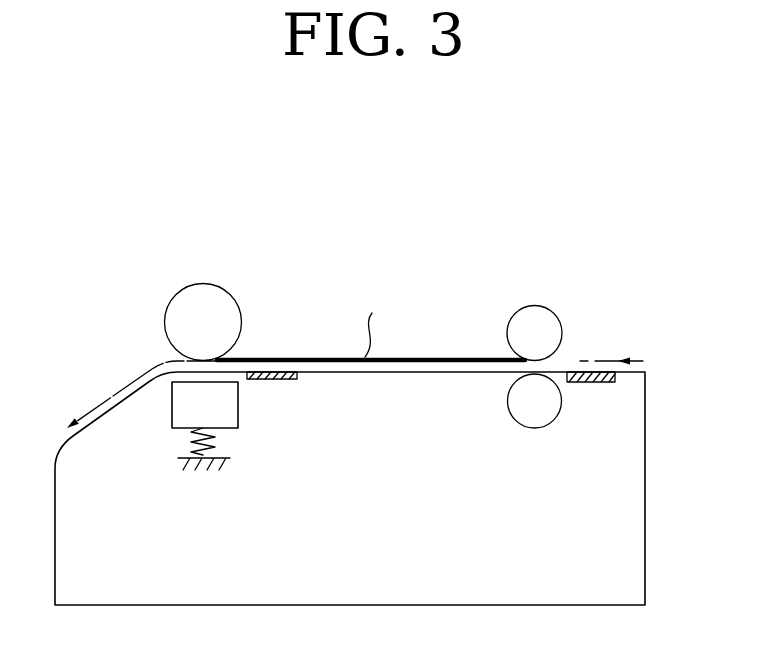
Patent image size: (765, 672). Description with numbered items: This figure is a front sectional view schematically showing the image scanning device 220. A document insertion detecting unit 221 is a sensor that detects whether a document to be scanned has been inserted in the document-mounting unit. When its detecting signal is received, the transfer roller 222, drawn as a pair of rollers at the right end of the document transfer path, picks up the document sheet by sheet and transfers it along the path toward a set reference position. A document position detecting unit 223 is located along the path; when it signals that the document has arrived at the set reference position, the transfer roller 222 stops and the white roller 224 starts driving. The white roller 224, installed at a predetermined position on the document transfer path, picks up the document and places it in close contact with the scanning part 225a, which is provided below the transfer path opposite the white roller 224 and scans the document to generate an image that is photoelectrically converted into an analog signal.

The image scanning device 220 is at (379, 203).
The document insertion detecting unit 221 is at (605, 383).
The transfer roller 222 is at (563, 378).
The document position detecting unit 223 is at (273, 380).
The white roller 224 is at (203, 283).
The scanning part 225a is at (172, 407).